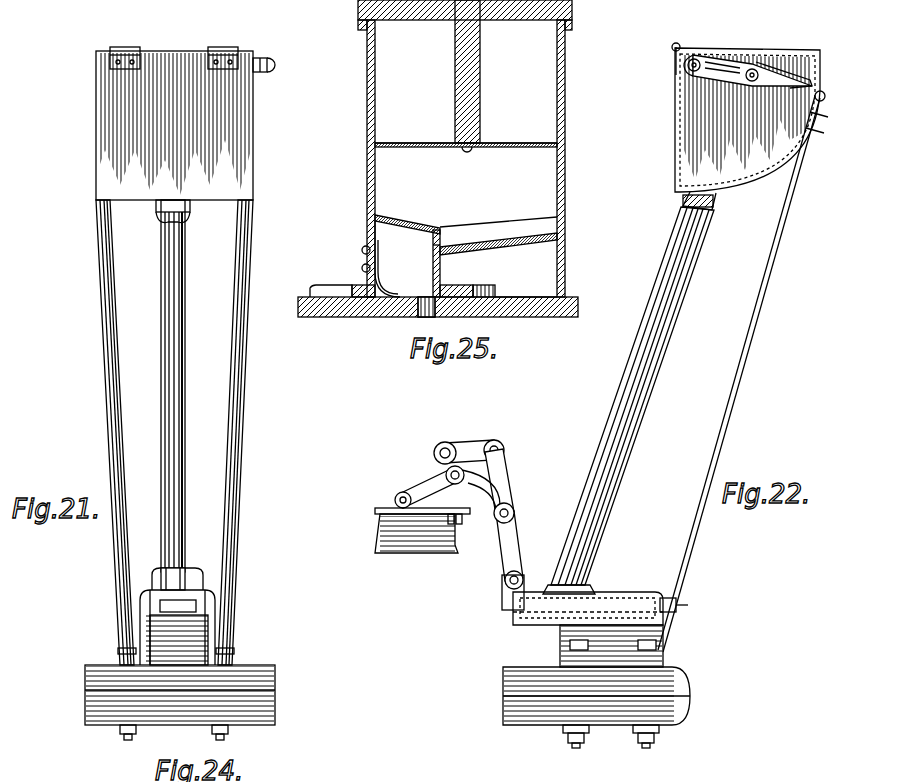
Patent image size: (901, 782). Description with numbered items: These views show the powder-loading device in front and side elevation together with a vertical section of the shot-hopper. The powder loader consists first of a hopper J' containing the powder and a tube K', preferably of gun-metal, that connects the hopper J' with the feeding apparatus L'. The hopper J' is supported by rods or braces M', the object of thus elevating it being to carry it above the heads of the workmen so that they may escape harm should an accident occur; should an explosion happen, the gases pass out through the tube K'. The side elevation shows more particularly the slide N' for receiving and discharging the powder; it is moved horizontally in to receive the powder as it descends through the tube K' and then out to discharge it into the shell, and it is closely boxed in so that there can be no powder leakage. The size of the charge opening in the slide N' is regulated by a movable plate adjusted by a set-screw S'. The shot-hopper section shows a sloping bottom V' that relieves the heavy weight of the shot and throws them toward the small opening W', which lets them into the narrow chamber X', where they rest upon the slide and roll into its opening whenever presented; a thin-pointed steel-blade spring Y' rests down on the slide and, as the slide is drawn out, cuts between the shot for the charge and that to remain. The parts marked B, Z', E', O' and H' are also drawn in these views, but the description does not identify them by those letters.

In FIG. 21, the hopper J' is at (185, 123).
In FIG. 22, the hopper J' is at (746, 126).
In FIG. 21, the tube K' is at (186, 386).
In FIG. 22, the tube K' is at (628, 400).
In FIG. 21, the rods or braces M' is at (187, 432).
In FIG. 22, the rods or braces M' is at (743, 371).
In FIG. 21, the feeding apparatus L' is at (177, 616).
In FIG. 21, the base beam B is at (180, 702).
In FIG. 22, the base beam B is at (528, 664).
In FIG. 25, the central post Z' is at (482, 71).
In FIG. 25, the sloping bottom V' is at (466, 246).
In FIG. 25, the small opening W' is at (414, 242).
In FIG. 25, the narrow chamber X' is at (391, 259).
In FIG. 25, the steel-blade spring Y' is at (438, 313).
In FIG. 22, the set-screw S' is at (684, 611).
In FIG. 22, the slide block E' is at (588, 629).
In FIG. 22, the link O' is at (486, 514).
In FIG. 22, the shelf H' is at (422, 509).
In FIG. 22, the slide N' is at (494, 593).